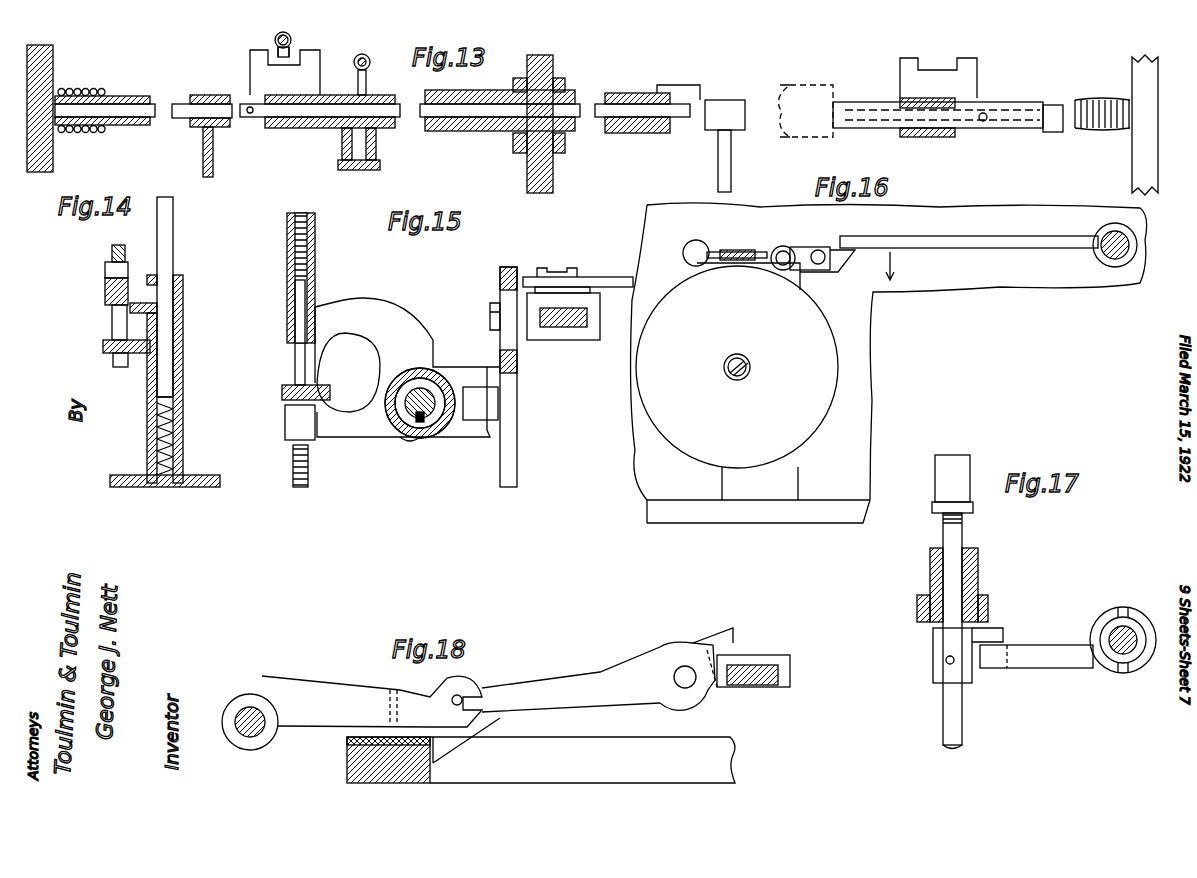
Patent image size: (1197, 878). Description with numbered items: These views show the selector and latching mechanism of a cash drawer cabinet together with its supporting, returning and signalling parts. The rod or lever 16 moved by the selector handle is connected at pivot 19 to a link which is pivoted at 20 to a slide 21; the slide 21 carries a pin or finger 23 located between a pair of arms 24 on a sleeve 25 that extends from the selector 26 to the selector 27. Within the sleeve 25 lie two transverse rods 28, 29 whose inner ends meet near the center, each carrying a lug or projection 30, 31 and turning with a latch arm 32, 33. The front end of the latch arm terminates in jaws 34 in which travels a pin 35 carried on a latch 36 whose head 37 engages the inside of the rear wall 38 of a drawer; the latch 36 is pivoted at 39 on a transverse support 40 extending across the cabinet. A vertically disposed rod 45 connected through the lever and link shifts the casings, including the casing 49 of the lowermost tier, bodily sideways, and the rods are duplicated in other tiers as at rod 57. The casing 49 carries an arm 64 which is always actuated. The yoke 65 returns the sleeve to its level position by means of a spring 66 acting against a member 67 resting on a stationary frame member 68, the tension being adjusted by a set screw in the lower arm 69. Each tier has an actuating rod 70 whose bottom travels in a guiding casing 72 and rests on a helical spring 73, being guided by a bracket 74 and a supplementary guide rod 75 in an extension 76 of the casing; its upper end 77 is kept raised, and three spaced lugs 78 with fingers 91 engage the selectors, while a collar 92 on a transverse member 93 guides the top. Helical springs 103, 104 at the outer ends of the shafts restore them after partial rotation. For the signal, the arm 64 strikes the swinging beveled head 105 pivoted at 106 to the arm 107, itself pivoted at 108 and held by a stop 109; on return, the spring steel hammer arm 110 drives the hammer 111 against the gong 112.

In FIG. 15, the rod or lever 16 is at (615, 277).
In FIG. 15, the pivot of link to lever 19 is at (530, 277).
In FIG. 15, the pivot of link to slide 20 is at (583, 283).
In FIG. 15, the slide 21 is at (538, 333).
In FIG. 13, the pin or finger 23 is at (376, 148).
In FIG. 15, the pin or finger 23 is at (470, 420).
In FIG. 13, the arms 24 is at (340, 146).
In FIG. 15, the arms 24 is at (450, 430).
In FIG. 13, the sleeve 25 is at (392, 98).
In FIG. 15, the sleeve 25 is at (450, 385).
In FIG. 17, the sleeve 25 is at (1130, 625).
In FIG. 13, the selector 26 is at (258, 72).
In FIG. 17, the selector 26 is at (1050, 660).
In FIG. 13, the selector 27 is at (975, 82).
In FIG. 13, the rod 28 is at (578, 104).
In FIG. 13, the rod 29 is at (155, 106).
In FIG. 15, the rod 29 is at (425, 395).
In FIG. 17, the rod 29 is at (1110, 635).
In FIG. 18, the rod 29 is at (245, 705).
In FIG. 13, the lug or projection 30 is at (985, 121).
In FIG. 13, the lug or projection 31 is at (250, 114).
In FIG. 13, the latch arm 32 is at (732, 150).
In FIG. 13, the latch arm 33 is at (205, 152).
In FIG. 18, the latch arm 33 is at (330, 690).
In FIG. 18, the jaws 34 is at (445, 685).
In FIG. 18, the pin 35 is at (462, 697).
In FIG. 18, the latch 36 is at (595, 672).
In FIG. 18, the head 37 is at (455, 745).
In FIG. 18, the rear wall 38 is at (347, 760).
In FIG. 18, the pivot of latch 39 is at (680, 670).
In FIG. 18, the transverse support 40 is at (750, 680).
In FIG. 13, the vertically disposed rod 45 is at (337, 166).
In FIG. 15, the vertically disposed rod 45 is at (515, 462).
In FIG. 16, the casing 49 is at (1108, 232).
In FIG. 16, the rod 57 is at (1115, 260).
In FIG. 16, the arm 64 is at (955, 250).
In FIG. 13, the yoke 65 is at (356, 70).
In FIG. 15, the yoke 65 is at (373, 312).
In FIG. 15, the spring 66 is at (318, 266).
In FIG. 15, the member 67 is at (295, 360).
In FIG. 15, the stationary horizontal frame member / set screw 68 is at (318, 383).
In FIG. 15, the lower arm 69 is at (355, 437).
In FIG. 13, the actuating rod 70 is at (291, 37).
In FIG. 14, the actuating rod 70 is at (173, 236).
In FIG. 17, the actuating rod 70 is at (945, 708).
In FIG. 14, the guiding casing 72 is at (128, 478).
In FIG. 14, the helical spring 73 is at (157, 410).
In FIG. 14, the bracket 74 is at (138, 300).
In FIG. 14, the supplementary guide rod 75 is at (118, 325).
In FIG. 14, the extension 76 is at (105, 355).
In FIG. 17, the upper end 77 is at (935, 475).
In FIG. 13, the lugs 78 is at (277, 42).
In FIG. 17, the lugs 78 is at (933, 668).
In FIG. 13, the fingers 91 is at (292, 52).
In FIG. 17, the fingers 91 is at (1003, 633).
In FIG. 17, the collar 92 is at (930, 570).
In FIG. 15, the transverse member 93 is at (570, 330).
In FIG. 17, the transverse member 93 is at (985, 605).
In FIG. 13, the helical spring 103 is at (1098, 100).
In FIG. 13, the helical spring 104 is at (78, 96).
In FIG. 16, the swinging beveled head 105 is at (840, 262).
In FIG. 16, the pivot of beveled head 106 is at (830, 243).
In FIG. 16, the arm 107 is at (812, 247).
In FIG. 16, the pivot of arm 108 is at (772, 252).
In FIG. 16, the stop 109 is at (785, 245).
In FIG. 16, the hammer arm 110 is at (735, 250).
In FIG. 16, the hammer 111 is at (698, 240).
In FIG. 16, the gong 112 is at (755, 305).